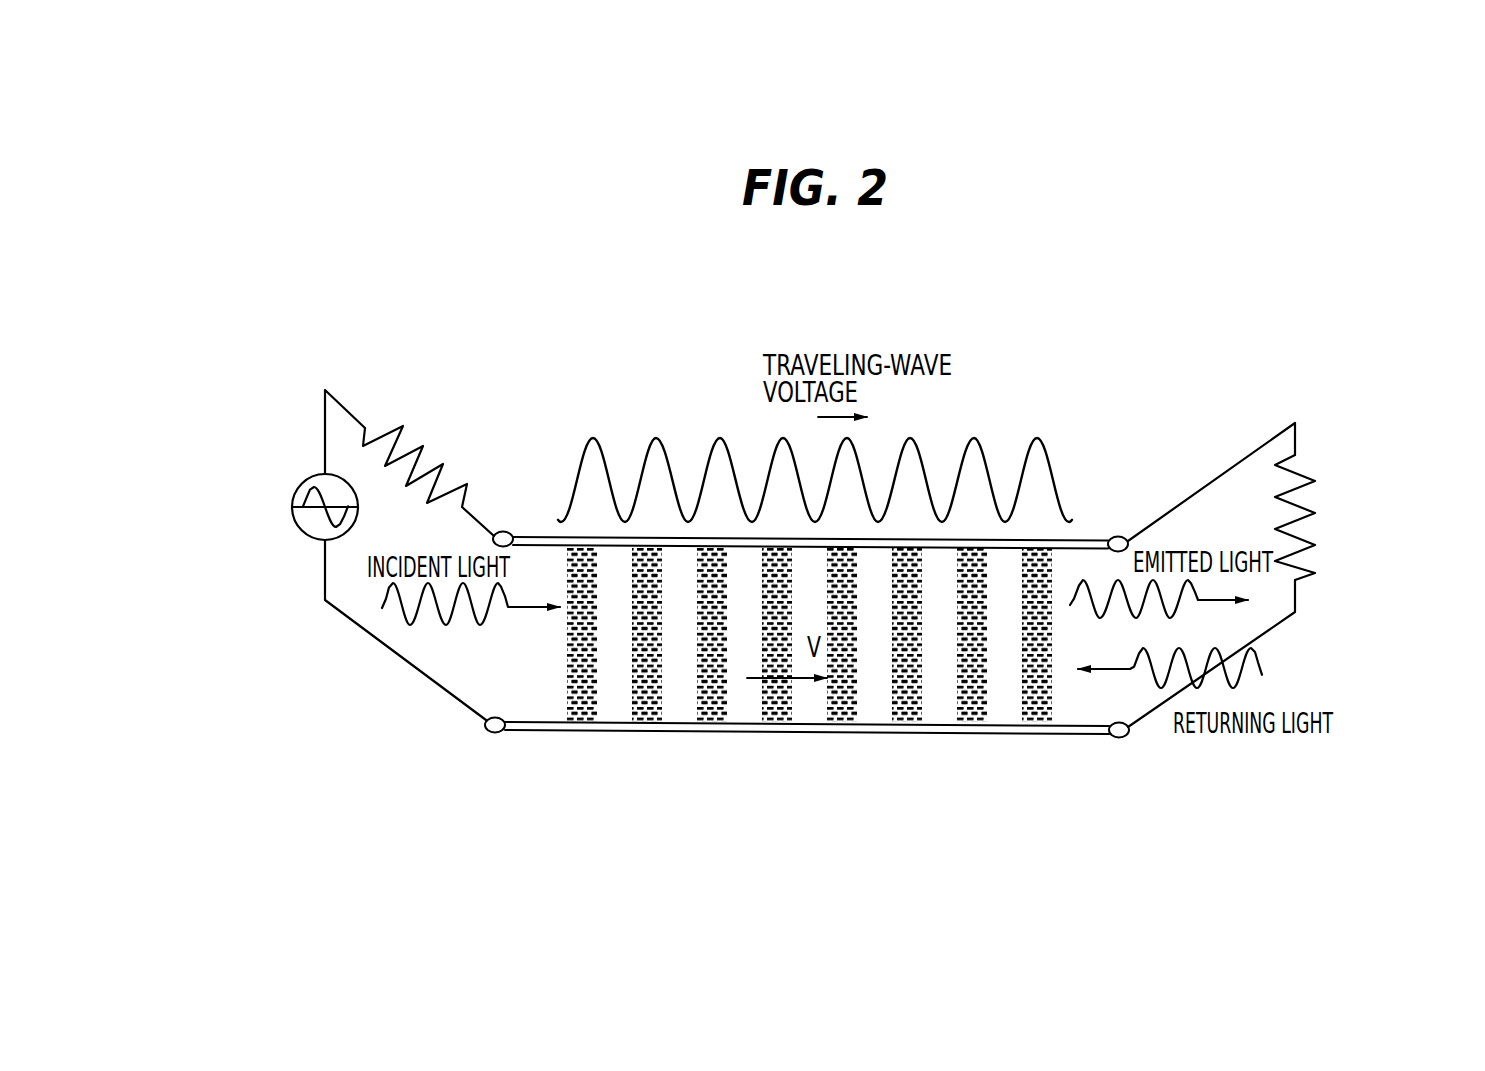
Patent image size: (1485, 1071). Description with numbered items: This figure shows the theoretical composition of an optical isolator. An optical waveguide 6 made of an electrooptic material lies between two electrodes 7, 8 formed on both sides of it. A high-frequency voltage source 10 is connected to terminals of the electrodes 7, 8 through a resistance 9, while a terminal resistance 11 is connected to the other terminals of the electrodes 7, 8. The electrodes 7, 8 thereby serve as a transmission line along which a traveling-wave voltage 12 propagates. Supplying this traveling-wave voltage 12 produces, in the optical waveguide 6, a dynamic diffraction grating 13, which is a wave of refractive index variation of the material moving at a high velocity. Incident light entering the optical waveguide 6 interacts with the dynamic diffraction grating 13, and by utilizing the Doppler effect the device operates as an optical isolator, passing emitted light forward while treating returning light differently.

The optical waveguide 6 is at (622, 705).
The electrode 7 is at (1087, 537).
The electrode 8 is at (753, 733).
The resistance 9 is at (440, 462).
The high-frequency voltage source 10 is at (297, 500).
The terminal resistance 11 is at (1305, 482).
The traveling-wave voltage 12 is at (973, 440).
The dynamic diffraction grating 13 is at (915, 707).